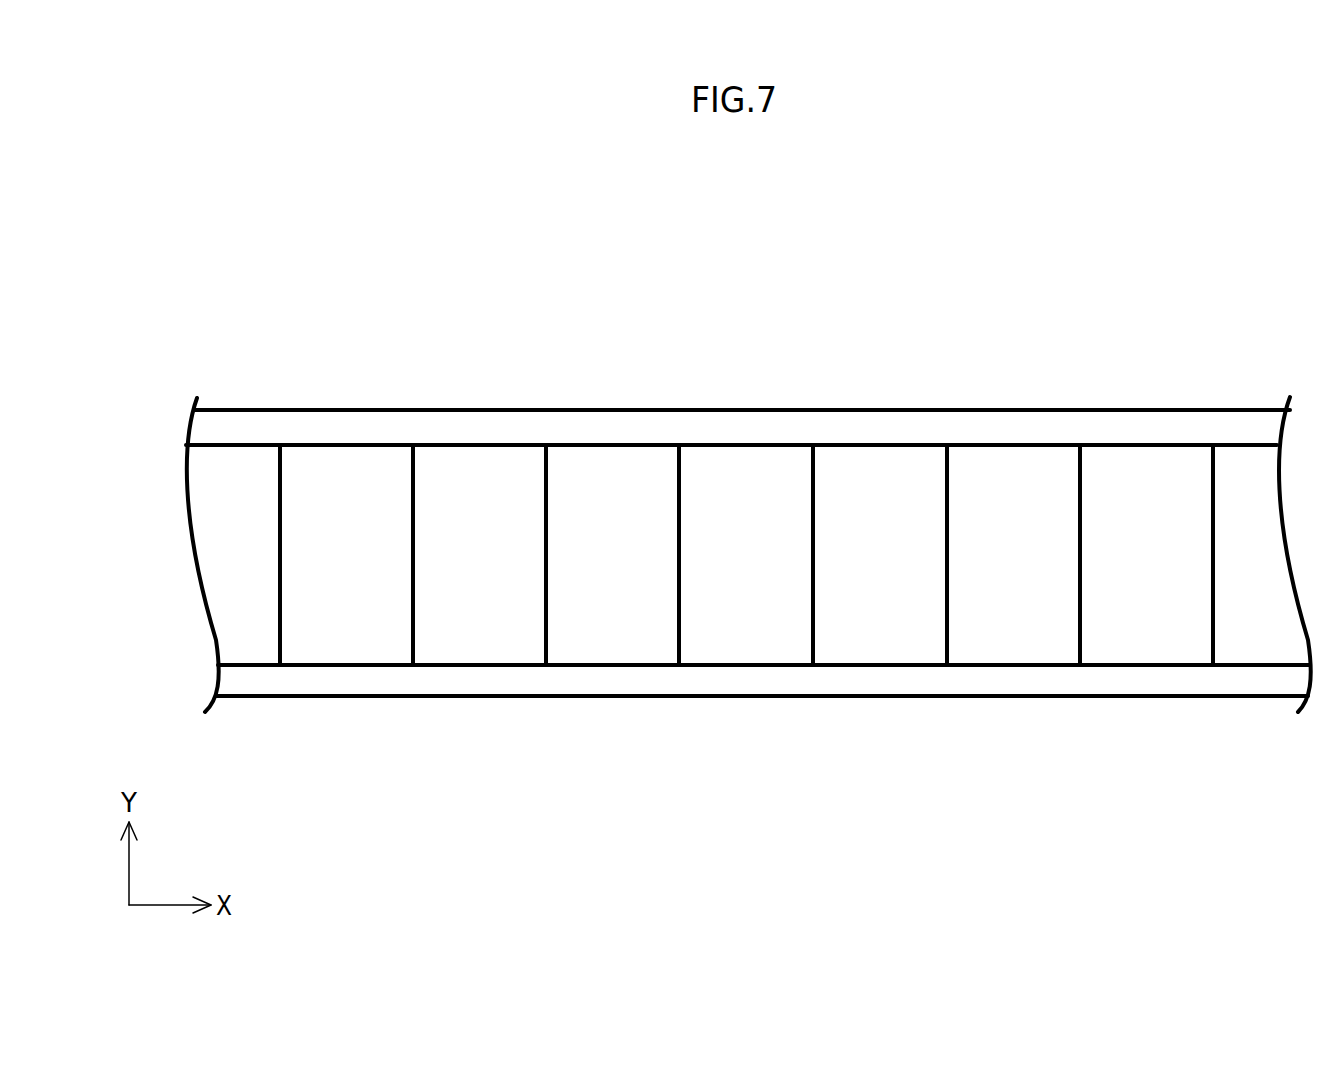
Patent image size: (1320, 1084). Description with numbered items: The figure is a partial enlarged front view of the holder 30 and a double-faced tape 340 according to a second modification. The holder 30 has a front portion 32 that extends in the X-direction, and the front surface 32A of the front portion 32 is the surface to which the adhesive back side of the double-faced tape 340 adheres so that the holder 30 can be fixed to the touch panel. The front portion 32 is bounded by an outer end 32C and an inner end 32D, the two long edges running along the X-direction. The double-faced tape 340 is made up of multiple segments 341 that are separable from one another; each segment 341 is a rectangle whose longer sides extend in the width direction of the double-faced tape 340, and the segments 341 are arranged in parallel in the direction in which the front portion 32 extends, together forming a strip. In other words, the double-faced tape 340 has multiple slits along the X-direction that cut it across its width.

The holder 30 is at (252, 409).
The front portion 32 is at (208, 430).
The front surface of the front portion 32A is at (328, 430).
The outer end of the front portion 32C is at (420, 409).
The inner end of the front portion 32D is at (420, 697).
The double-faced tape 340 is at (230, 610).
The segment 341 is at (612, 602).